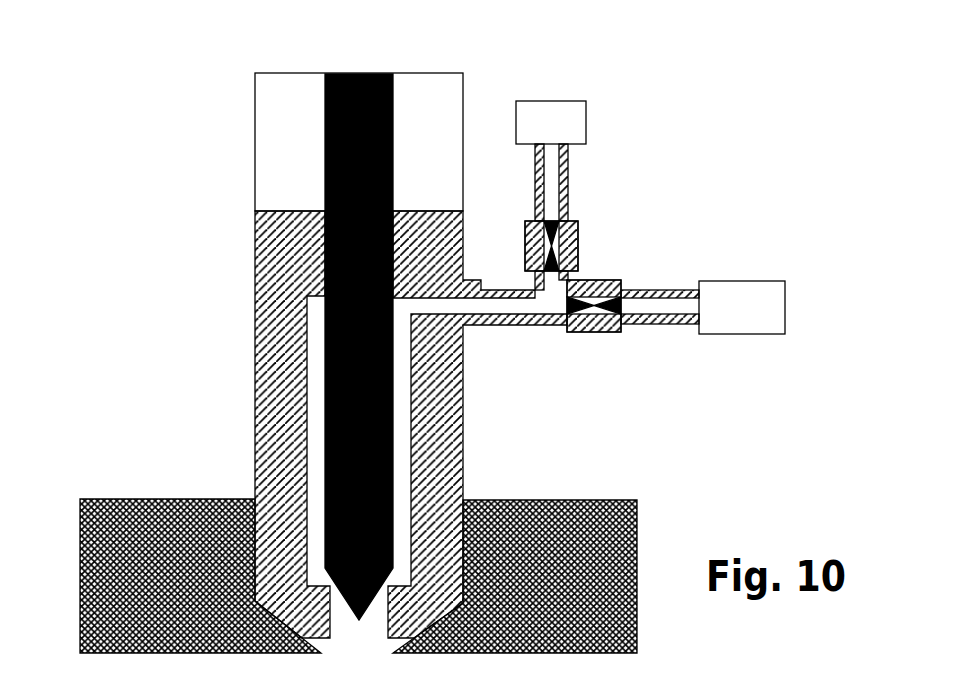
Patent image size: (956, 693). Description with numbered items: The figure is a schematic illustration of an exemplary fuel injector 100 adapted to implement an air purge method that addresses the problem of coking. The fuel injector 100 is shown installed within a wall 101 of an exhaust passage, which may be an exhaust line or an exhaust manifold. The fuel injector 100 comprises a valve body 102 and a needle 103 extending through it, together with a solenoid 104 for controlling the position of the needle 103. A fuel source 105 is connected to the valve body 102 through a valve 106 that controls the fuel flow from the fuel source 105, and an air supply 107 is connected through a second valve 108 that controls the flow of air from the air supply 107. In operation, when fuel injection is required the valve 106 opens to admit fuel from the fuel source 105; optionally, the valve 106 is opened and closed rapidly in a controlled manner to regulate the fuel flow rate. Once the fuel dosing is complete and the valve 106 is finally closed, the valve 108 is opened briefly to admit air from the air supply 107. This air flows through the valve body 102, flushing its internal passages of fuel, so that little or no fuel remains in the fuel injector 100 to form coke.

The fuel injector 100 is at (447, 340).
The wall 101 is at (113, 493).
The valve body 102 is at (263, 322).
The needle 103 is at (350, 83).
The solenoid 104 is at (265, 100).
The fuel source 105 is at (768, 292).
The valve 106 is at (588, 272).
The air supply 107 is at (568, 103).
The valve 108 is at (568, 213).